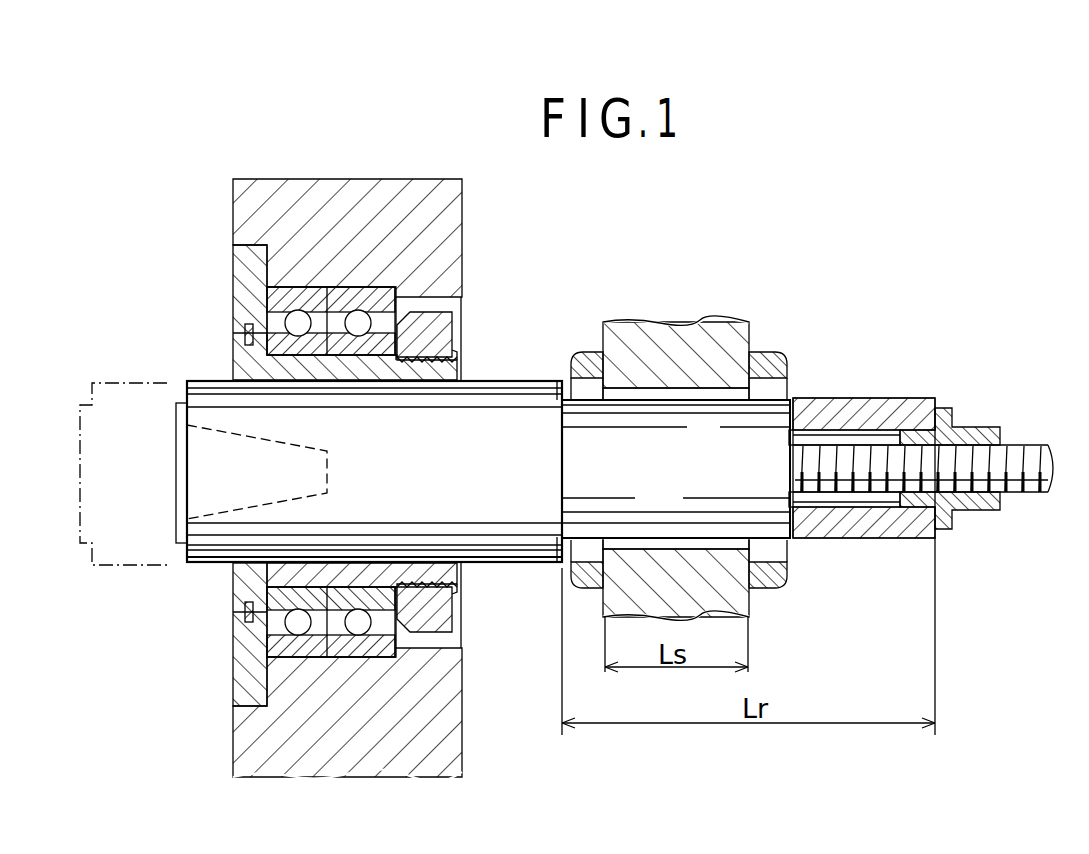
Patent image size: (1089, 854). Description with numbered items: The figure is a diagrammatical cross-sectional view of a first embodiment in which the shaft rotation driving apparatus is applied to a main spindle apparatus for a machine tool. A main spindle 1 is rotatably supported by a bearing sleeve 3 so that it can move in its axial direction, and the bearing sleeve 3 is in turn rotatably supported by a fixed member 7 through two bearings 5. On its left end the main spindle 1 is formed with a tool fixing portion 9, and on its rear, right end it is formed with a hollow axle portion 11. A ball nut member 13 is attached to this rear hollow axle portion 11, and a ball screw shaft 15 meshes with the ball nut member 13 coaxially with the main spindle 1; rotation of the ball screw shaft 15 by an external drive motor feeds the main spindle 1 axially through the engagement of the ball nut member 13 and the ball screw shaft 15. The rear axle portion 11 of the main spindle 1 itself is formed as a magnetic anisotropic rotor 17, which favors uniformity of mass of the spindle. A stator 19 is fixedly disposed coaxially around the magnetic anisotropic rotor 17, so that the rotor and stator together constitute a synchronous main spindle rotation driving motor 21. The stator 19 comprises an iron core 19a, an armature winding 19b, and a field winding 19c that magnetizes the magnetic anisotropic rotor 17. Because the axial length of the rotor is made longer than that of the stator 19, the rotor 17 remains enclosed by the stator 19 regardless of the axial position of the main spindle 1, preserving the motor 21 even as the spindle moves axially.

The main spindle 1 is at (487, 420).
The bearing sleeve 3 is at (442, 574).
The bearings 5 is at (320, 302).
The fixed member 7 is at (240, 214).
The tool fixing portion 9 is at (212, 516).
The hollow axle portion 11 is at (851, 399).
The ball nut member 13 is at (960, 428).
The ball screw shaft 15 is at (1020, 450).
The magnetic anisotropic rotor 17 is at (778, 488).
The stator 19 is at (716, 454).
The iron core 19a is at (690, 340).
The armature winding 19b is at (590, 352).
The field winding 19c is at (590, 588).
The main spindle rotation driving motor 21 is at (562, 358).